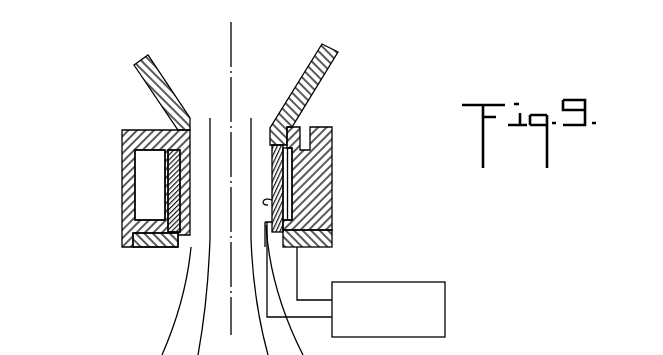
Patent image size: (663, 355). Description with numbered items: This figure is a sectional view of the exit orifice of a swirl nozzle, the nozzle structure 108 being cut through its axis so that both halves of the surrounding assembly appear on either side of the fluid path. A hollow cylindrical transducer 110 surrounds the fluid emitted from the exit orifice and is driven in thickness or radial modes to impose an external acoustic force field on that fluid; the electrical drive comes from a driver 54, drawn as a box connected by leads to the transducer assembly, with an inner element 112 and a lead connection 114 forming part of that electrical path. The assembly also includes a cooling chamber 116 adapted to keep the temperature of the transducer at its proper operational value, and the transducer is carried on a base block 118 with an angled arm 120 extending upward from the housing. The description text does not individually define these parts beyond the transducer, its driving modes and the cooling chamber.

The driver 54 is at (445, 301).
The housing 108 is at (190, 252).
The actuator body 110 is at (292, 160).
The piezoelectric layer 112 is at (277, 190).
The lead wire 114 is at (272, 200).
The cavity 116 is at (150, 189).
The base block 118 is at (300, 216).
The arm 120 is at (308, 127).